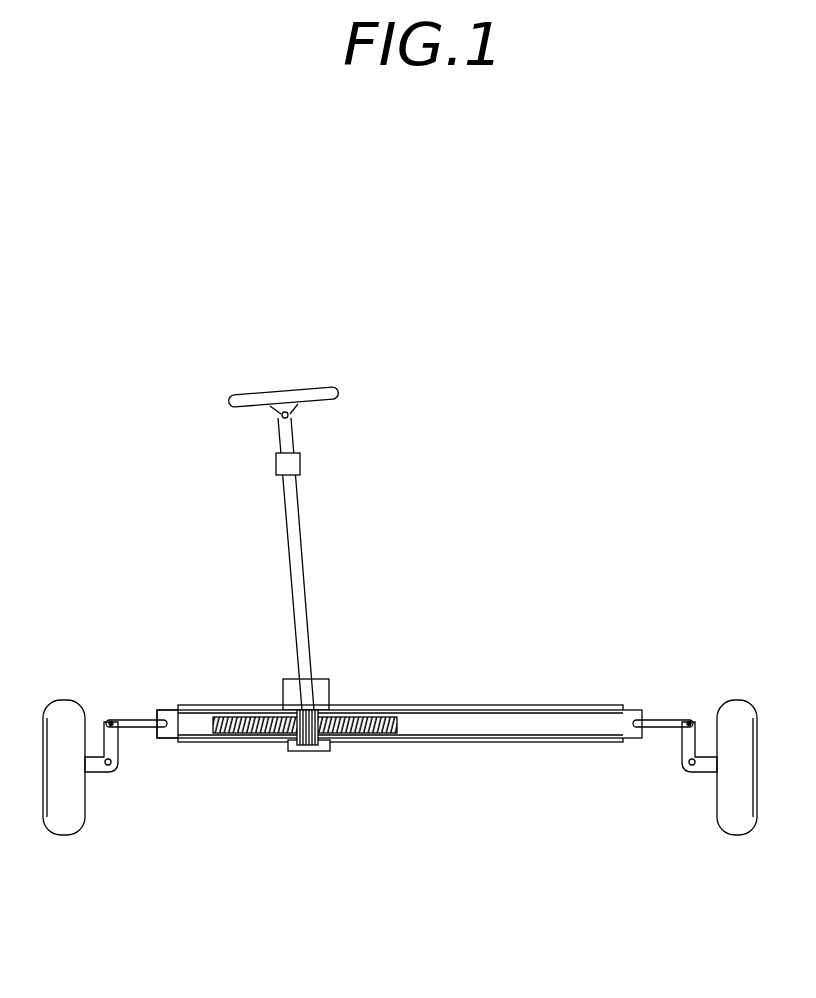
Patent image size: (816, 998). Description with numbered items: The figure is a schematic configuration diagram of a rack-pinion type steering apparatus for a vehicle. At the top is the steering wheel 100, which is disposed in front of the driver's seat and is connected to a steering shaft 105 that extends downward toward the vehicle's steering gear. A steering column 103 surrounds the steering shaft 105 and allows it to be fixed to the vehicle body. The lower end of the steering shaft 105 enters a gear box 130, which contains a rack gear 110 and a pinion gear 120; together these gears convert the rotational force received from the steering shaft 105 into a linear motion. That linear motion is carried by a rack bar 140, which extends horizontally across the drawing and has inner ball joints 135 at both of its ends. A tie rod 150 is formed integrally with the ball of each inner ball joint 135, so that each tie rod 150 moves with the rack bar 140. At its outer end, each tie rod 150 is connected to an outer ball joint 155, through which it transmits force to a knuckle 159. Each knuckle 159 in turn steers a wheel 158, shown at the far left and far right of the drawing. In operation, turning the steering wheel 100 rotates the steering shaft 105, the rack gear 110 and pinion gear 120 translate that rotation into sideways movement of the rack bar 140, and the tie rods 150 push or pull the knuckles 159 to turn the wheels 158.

The steering wheel 100 is at (332, 384).
The steering column 103 is at (302, 463).
The steering shaft 105 is at (298, 547).
The rack gear 110 is at (392, 738).
The pinion gear 120 is at (297, 751).
The gear box 130 is at (330, 692).
The inner ball joint 135 is at (165, 710).
The rack bar 140 is at (540, 742).
The tie rod 150 is at (140, 720).
The outer ball joint 155 is at (111, 718).
The wheel 158 is at (60, 698).
The knuckle 159 is at (118, 740).